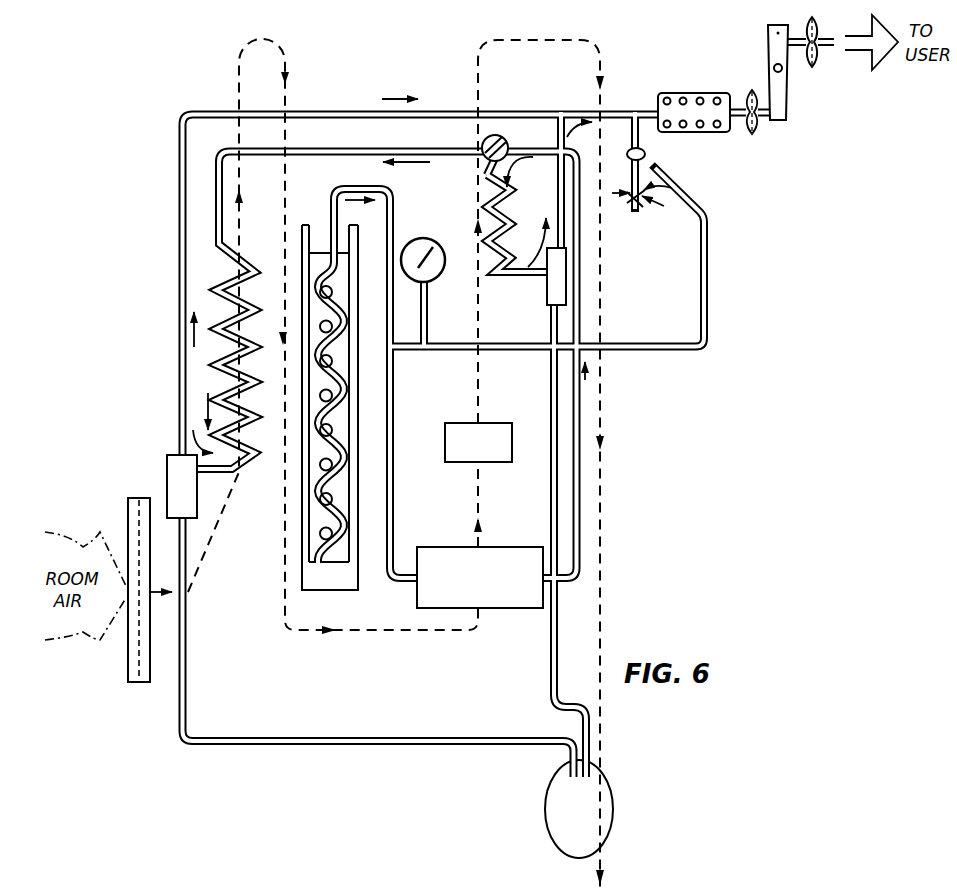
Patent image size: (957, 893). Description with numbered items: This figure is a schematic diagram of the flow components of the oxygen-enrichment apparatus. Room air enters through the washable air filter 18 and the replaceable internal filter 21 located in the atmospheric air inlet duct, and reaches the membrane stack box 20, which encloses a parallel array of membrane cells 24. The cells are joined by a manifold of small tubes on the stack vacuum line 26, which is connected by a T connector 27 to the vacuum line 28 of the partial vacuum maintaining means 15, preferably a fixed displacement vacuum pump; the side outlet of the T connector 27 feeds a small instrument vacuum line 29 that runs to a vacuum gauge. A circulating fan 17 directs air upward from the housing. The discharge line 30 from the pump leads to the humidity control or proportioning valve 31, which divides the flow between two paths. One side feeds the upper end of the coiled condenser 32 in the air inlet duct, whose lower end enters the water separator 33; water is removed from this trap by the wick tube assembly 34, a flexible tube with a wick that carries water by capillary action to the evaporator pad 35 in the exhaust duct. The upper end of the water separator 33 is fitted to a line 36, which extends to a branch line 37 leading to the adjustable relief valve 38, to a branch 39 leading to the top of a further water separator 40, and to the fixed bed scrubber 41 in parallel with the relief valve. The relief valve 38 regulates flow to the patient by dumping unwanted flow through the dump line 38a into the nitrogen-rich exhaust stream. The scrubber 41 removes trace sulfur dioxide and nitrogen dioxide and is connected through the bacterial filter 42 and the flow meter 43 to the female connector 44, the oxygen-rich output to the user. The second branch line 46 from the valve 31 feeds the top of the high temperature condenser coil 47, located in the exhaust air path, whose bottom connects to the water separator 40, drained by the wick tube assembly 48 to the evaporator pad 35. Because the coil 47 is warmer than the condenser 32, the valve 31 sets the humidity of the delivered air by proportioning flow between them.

The partial vacuum maintaining means 15 is at (523, 546).
The circulating fan 17 is at (498, 422).
The washable air filter 18 is at (128, 508).
The membrane stack box 20 is at (300, 535).
The replaceable internal filter 21 is at (155, 590).
The membrane cells 24 is at (345, 412).
The stack vacuum line 26 is at (396, 212).
The T connector 27 is at (402, 368).
The vacuum line 28 is at (393, 503).
The instrument vacuum line 29 is at (640, 352).
The discharge line 30 is at (582, 505).
The humidity control valve 31 is at (498, 135).
The coiled condenser 32 is at (225, 292).
The water separator 33 is at (167, 462).
The wick tube assembly 34 is at (440, 737).
The evaporator pad 35 is at (600, 795).
The line 36 is at (178, 219).
The branch line 37 is at (622, 110).
The adjustable relief valve 38 is at (672, 186).
The dump line 38a is at (636, 213).
The branch 39 is at (563, 237).
The water separator 40 is at (546, 295).
The fixed bed scrubber 41 is at (680, 93).
The bacterial filter 42 is at (763, 126).
The flow meter 43 is at (768, 38).
The female connector 44 is at (820, 28).
The second branch line 46 is at (490, 168).
The high temperature condenser coil 47 is at (515, 208).
The wick tube assembly 48 is at (550, 628).